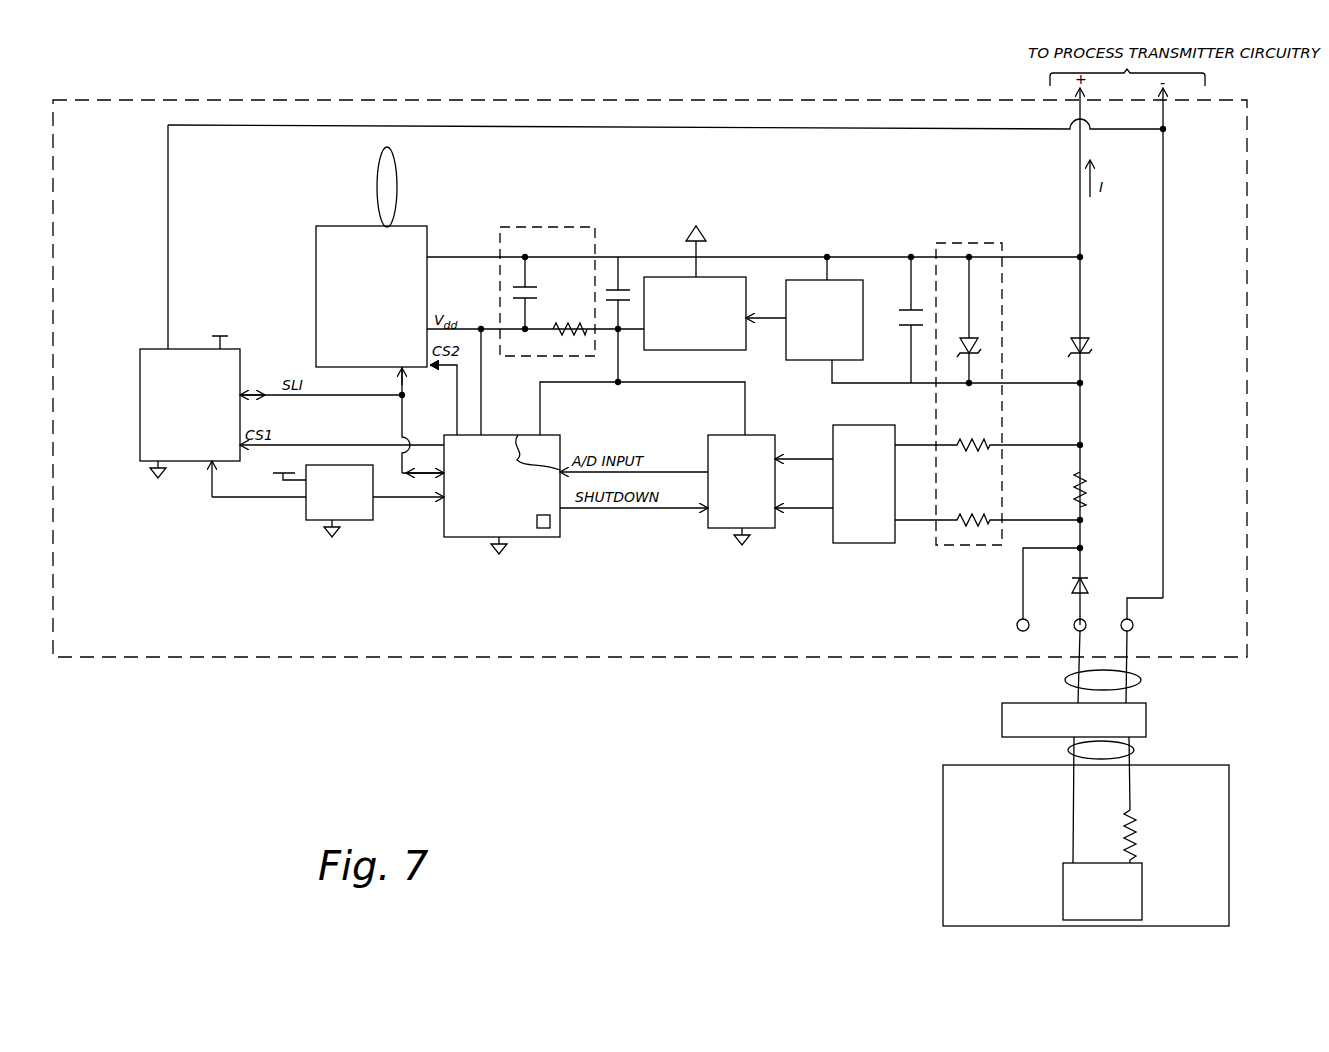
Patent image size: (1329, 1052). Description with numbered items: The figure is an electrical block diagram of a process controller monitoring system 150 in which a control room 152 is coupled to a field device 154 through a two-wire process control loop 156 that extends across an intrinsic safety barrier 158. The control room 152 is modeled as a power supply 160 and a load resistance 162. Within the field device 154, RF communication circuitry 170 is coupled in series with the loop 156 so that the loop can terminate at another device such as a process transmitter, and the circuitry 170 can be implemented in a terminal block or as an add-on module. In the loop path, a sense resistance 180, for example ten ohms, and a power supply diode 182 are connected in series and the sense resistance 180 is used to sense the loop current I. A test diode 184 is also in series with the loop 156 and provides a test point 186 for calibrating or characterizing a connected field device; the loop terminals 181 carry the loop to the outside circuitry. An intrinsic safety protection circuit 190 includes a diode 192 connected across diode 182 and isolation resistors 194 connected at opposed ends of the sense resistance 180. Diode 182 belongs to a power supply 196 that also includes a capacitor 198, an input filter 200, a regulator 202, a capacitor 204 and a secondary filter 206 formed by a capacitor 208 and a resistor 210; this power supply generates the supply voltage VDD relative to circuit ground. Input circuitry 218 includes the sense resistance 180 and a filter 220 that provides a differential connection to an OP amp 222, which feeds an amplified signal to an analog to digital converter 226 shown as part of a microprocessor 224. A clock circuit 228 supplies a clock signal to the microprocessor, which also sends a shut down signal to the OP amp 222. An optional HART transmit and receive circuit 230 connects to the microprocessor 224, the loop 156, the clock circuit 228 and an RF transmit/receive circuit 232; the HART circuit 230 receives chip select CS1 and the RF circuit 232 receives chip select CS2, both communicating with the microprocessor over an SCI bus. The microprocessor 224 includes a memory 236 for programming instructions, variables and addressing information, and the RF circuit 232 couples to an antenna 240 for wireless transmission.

The process controller monitoring system 150 is at (822, 808).
The control room 152 is at (955, 868).
The field device 154 is at (320, 675).
The two-wire process control loop 156 is at (1141, 680).
The intrinsic safety barrier 158 is at (1146, 716).
The power supply 160 is at (1063, 893).
The load resistance 162 is at (1122, 816).
The RF communication circuitry 170 is at (482, 657).
The sense resistance 180 is at (1086, 477).
The loop terminals 181 is at (1075, 620).
The power supply diode 182 is at (1084, 338).
The test diode 184 is at (1084, 576).
The test point 186 is at (1018, 620).
The intrinsic safety protection circuit 190 is at (970, 243).
The diode 192 is at (972, 336).
The isolation resistors 194 is at (989, 442).
The power supply 196 is at (795, 237).
The capacitor 198 is at (905, 328).
The input filter 200 is at (824, 308).
The regulator 202 is at (695, 288).
The capacitor 204 is at (622, 272).
The secondary filter 206 is at (545, 228).
The capacitor 208 is at (530, 290).
The resistor 210 is at (585, 322).
The input circuitry 218 is at (765, 545).
The filter 220 is at (864, 484).
The OP amp 222 is at (741, 490).
The microprocessor 224 is at (502, 494).
The analog to digital converter 226 is at (555, 435).
The clock circuit 228 is at (373, 521).
The HART transmit and receive circuit 230 is at (140, 418).
The RF transmit/receive circuit 232 is at (316, 262).
The memory 236 is at (543, 528).
The antenna 240 is at (377, 190).